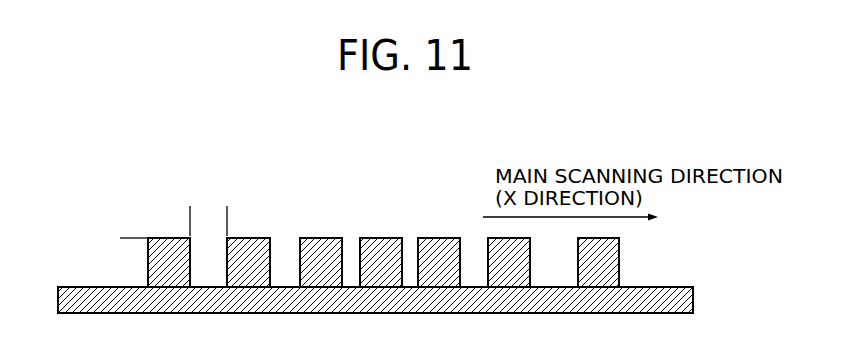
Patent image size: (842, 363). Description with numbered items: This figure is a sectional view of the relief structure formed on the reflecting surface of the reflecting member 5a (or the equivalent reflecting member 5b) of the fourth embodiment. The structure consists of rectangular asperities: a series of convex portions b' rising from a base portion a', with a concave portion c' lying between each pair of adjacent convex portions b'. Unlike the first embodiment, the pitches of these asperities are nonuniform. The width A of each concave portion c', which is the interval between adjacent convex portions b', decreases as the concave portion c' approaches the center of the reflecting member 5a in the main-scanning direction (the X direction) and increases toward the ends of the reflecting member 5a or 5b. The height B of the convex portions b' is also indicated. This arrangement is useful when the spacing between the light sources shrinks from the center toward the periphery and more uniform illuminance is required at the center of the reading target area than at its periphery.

The reflecting member 5a is at (513, 122).
The reflecting member 5b is at (384, 275).
The base portion a' is at (384, 320).
The convex portion b' is at (167, 241).
The concave portion c' is at (225, 241).
The width of concave portion A is at (227, 212).
The height of protruding portion B is at (125, 238).